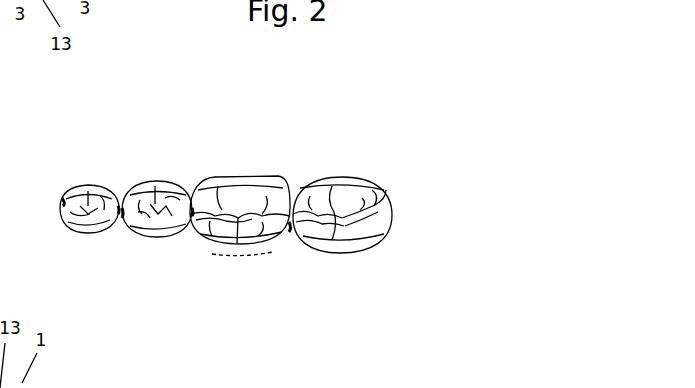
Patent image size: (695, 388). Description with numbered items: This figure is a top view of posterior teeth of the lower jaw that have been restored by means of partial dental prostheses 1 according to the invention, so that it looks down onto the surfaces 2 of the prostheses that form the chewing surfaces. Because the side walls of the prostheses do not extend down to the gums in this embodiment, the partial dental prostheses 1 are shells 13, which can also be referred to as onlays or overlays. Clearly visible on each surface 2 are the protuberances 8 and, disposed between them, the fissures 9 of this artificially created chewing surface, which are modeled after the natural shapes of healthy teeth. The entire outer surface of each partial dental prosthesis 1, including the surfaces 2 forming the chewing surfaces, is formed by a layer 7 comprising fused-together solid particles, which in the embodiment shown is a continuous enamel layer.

The partial dental prosthesis 1 is at (93, 239).
The surface 2 is at (66, 201).
The layer 7 is at (148, 193).
The protuberances 8 is at (88, 230).
The fissures 9 is at (91, 207).
The shells 13 is at (101, 233).